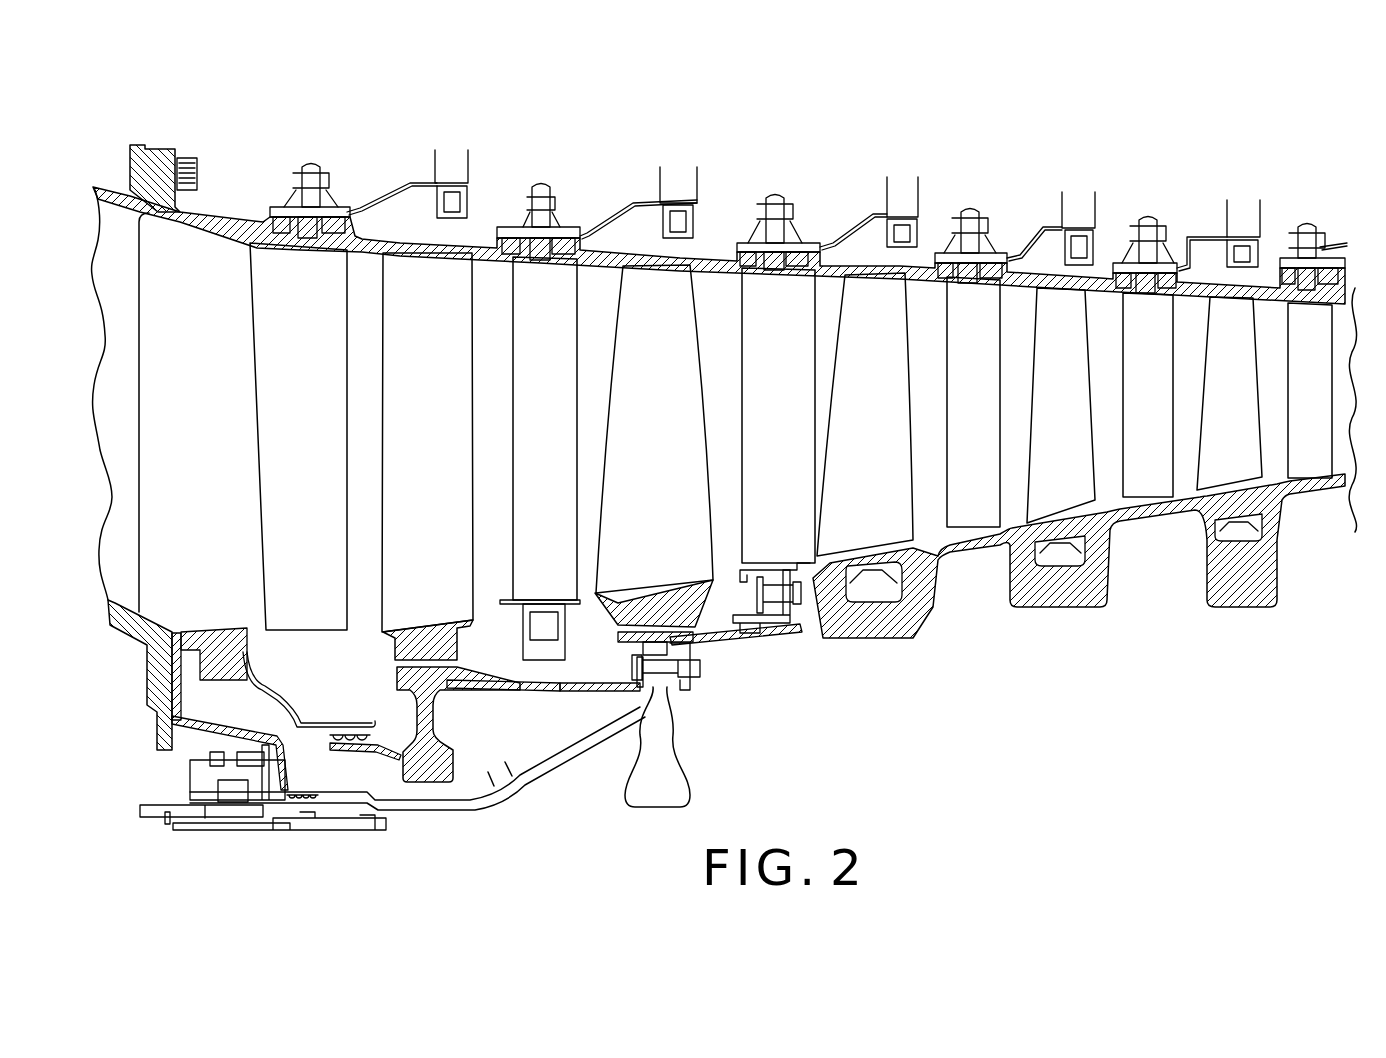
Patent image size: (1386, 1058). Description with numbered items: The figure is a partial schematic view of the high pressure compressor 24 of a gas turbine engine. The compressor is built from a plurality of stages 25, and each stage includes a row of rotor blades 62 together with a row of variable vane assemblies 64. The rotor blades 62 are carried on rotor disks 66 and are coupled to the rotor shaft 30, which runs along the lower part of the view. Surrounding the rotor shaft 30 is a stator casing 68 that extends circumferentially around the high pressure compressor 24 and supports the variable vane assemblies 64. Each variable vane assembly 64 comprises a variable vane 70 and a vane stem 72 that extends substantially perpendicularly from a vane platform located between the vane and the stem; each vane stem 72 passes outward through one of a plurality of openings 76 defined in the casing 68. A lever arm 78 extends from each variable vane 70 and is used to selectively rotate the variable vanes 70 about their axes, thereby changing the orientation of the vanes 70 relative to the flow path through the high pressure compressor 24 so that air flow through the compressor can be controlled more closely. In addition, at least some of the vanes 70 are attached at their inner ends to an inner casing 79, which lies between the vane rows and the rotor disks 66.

The high pressure compressor 24 is at (266, 108).
The stages 25 is at (362, 296).
The rotor shaft 30 is at (455, 807).
The rotor blades 62 is at (409, 509).
The variable vane assemblies 64 is at (292, 200).
The rotor disks 66 is at (457, 754).
The stator casing 68 is at (205, 150).
The variable vane 70 is at (284, 433).
The vane stem 72 is at (306, 166).
The openings 76 is at (333, 228).
The lever arm 78 is at (367, 193).
The inner casing 79 is at (800, 590).